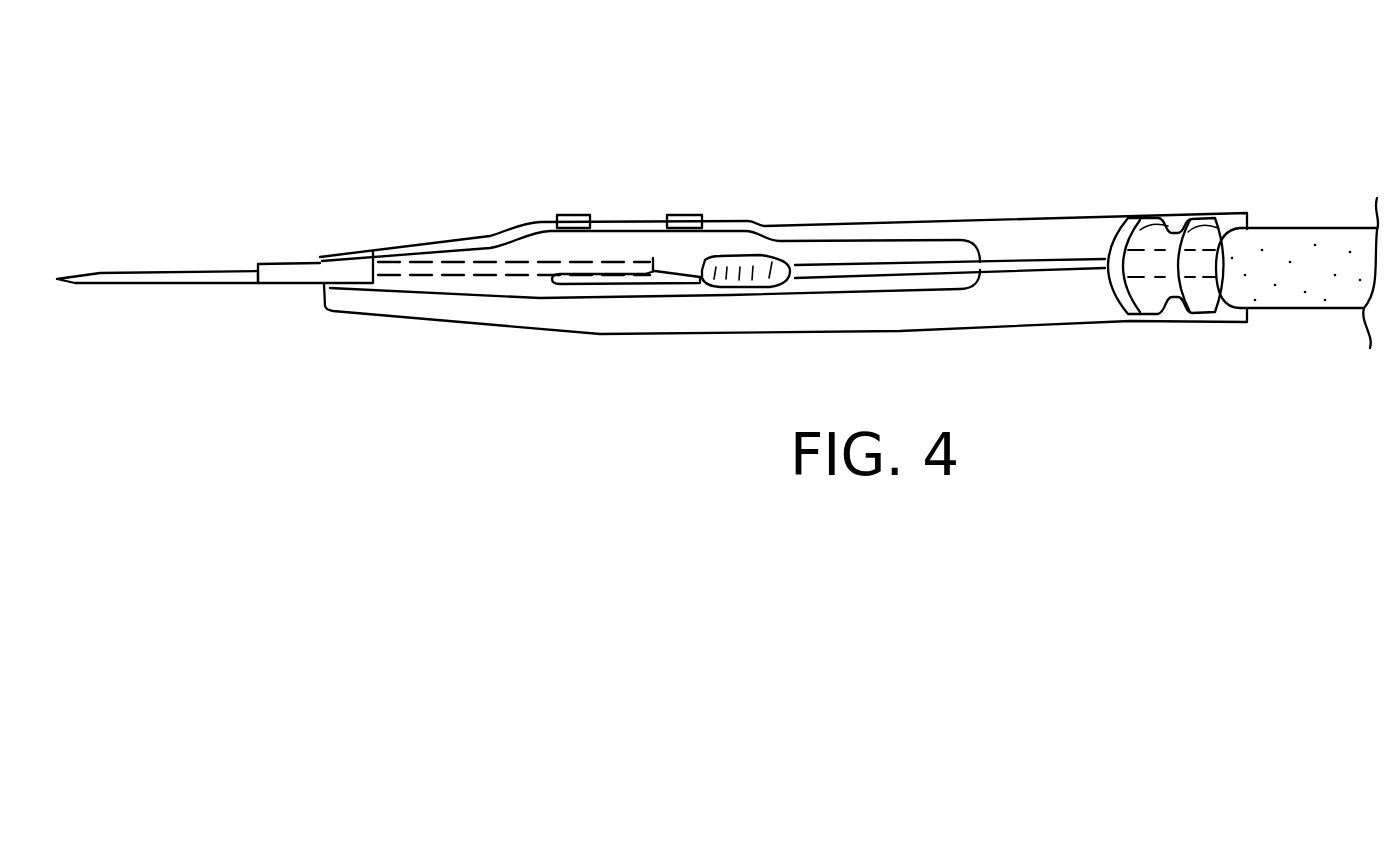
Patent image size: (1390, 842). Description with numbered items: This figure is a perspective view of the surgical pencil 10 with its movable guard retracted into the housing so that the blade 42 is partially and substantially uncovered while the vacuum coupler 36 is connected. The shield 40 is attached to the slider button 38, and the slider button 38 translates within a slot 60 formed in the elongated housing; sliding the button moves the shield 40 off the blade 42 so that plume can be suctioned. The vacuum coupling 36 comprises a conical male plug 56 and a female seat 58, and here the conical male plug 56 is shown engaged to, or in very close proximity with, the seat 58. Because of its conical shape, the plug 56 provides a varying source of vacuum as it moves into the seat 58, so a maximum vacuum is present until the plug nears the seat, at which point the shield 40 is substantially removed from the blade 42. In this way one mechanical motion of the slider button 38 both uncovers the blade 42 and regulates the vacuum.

The surgical pencil 10 is at (922, 118).
The vacuum coupler 36 is at (1160, 356).
The slider button 38 is at (750, 290).
The shield 40 is at (296, 287).
The blade 42 is at (173, 287).
The conical male plug 56 is at (1168, 228).
The female seat 58 is at (1250, 228).
The slot 60 is at (623, 283).